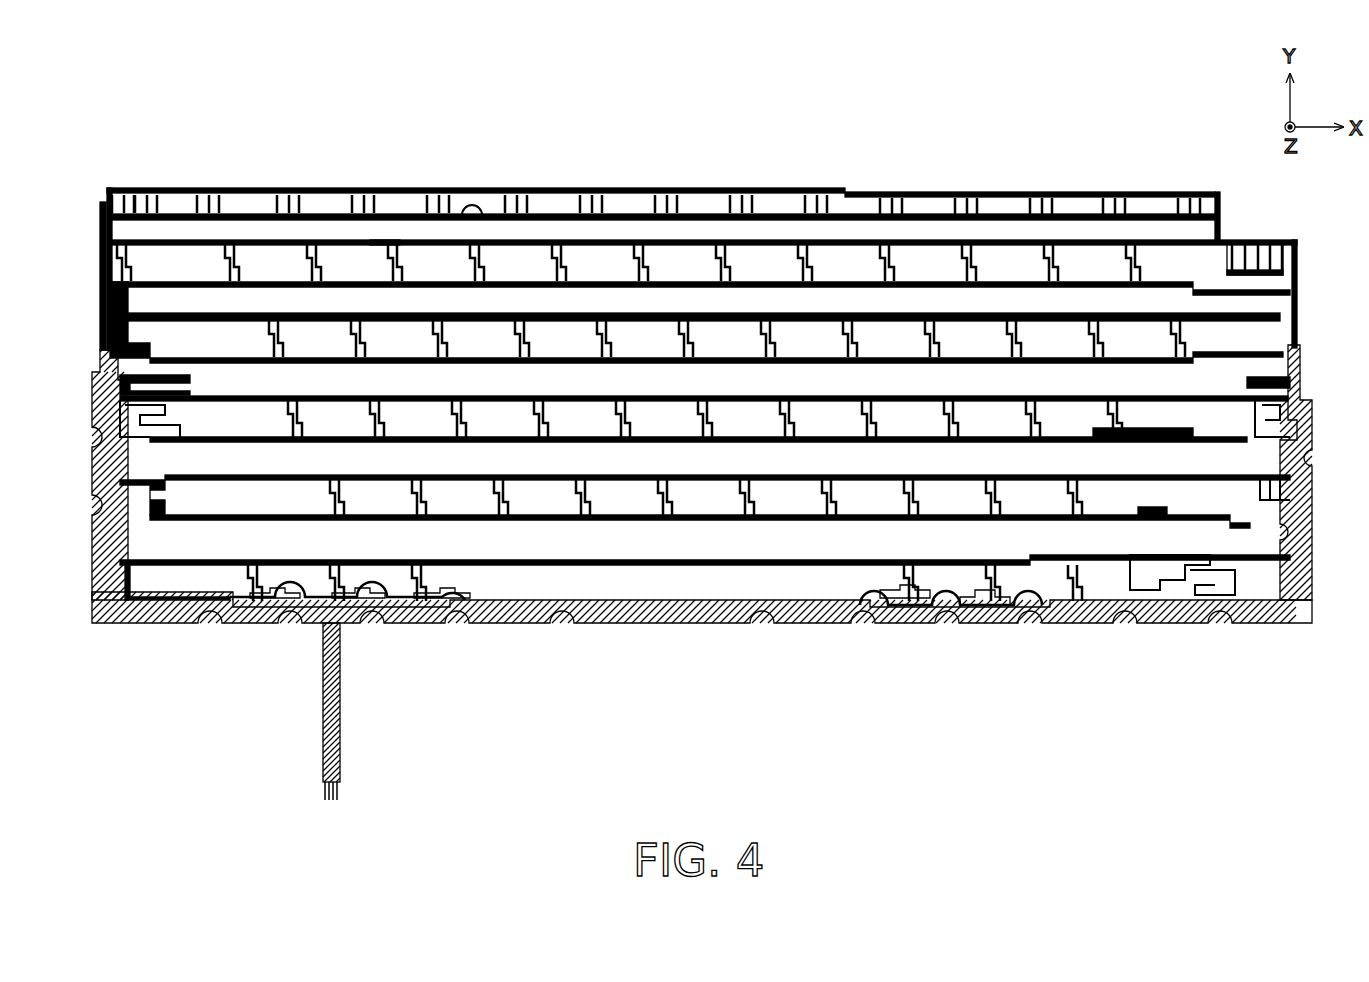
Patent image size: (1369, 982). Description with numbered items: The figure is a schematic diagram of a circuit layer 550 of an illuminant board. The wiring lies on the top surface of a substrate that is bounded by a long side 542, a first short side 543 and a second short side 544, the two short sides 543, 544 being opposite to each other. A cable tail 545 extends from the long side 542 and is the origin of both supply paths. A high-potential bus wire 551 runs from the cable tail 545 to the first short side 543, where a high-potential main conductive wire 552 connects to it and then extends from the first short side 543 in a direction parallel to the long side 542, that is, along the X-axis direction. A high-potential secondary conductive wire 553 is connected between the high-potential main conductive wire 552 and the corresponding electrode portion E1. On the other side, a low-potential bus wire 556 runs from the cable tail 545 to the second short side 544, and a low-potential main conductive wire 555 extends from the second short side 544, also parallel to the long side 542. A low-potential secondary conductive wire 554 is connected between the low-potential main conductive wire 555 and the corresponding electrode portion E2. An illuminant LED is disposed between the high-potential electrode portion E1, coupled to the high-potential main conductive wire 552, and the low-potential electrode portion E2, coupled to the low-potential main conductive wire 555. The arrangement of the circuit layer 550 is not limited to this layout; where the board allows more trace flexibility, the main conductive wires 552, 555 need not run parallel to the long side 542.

The circuit layer 550 is at (93, 92).
The high-potential bus wire 551 is at (102, 262).
The high-potential main conductive wire 552 is at (160, 240).
The high-potential secondary conductive wire 553 is at (222, 262).
The low-potential secondary conductive wire 554 is at (325, 262).
The low-potential main conductive wire 555 is at (355, 283).
The electrode portion E1 is at (378, 242).
The electrode portion E2 is at (393, 252).
The low-potential bus wire 556 is at (1300, 300).
The second short side 544 is at (1316, 392).
The first short side 543 is at (88, 392).
The long side 542 is at (677, 646).
The cable tail 545 is at (306, 759).